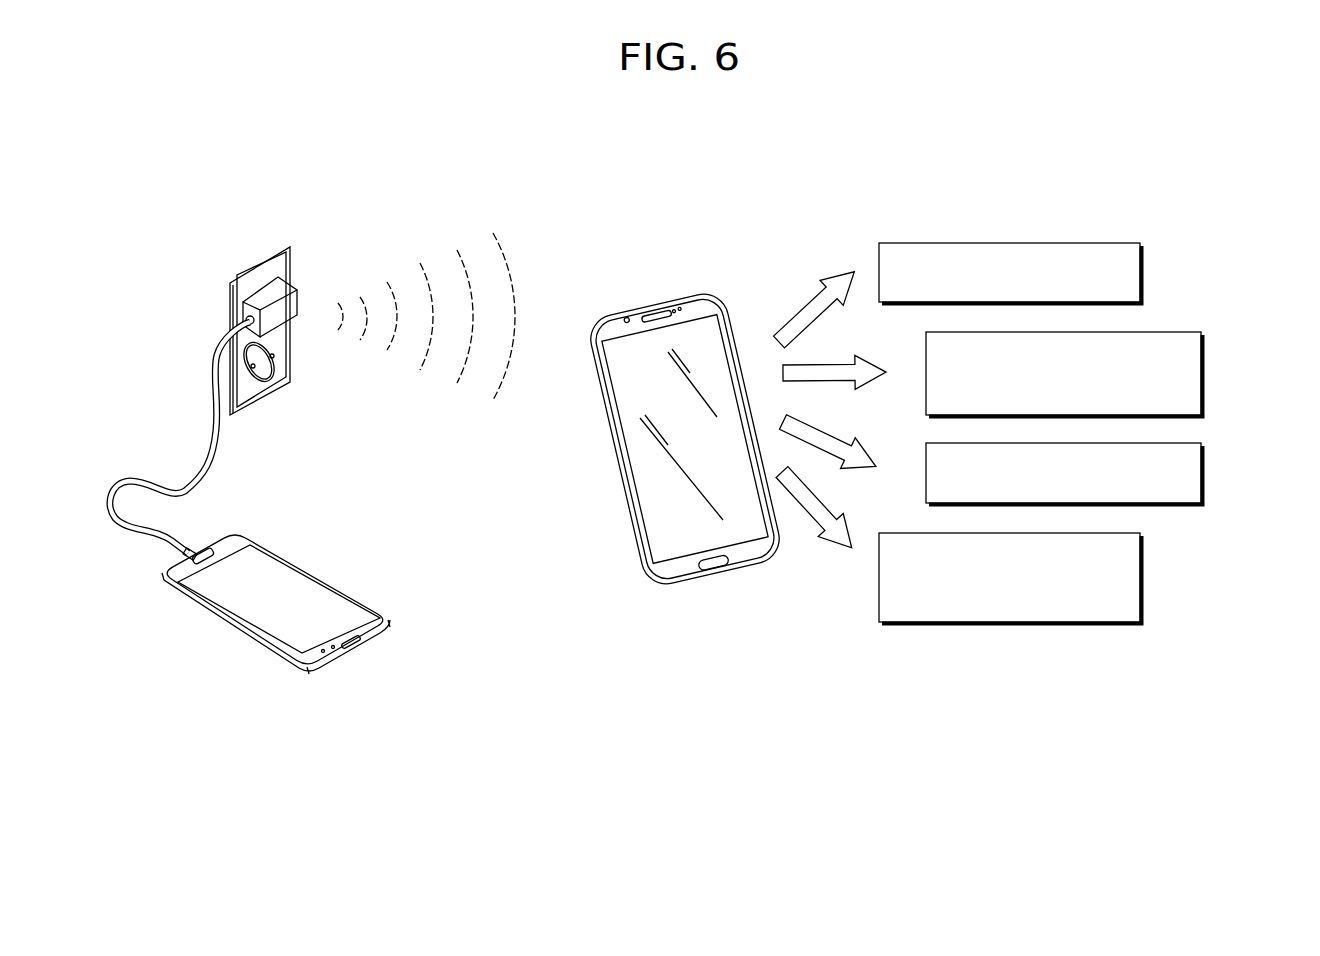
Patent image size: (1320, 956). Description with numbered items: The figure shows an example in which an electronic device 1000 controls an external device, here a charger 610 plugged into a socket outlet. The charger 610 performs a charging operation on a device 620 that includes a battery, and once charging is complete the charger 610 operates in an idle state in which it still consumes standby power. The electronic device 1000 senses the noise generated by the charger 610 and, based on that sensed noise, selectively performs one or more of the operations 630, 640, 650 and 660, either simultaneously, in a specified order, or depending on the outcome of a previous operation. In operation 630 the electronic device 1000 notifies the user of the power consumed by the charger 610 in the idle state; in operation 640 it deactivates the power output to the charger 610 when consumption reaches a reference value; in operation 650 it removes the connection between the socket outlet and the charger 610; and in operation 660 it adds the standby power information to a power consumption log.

The charger 610 is at (272, 297).
The device 620 is at (363, 653).
The electronic device 1000 is at (692, 290).
The operation 630 is at (1143, 276).
The operation 640 is at (1204, 376).
The operation 650 is at (1204, 481).
The operation 660 is at (1143, 571).